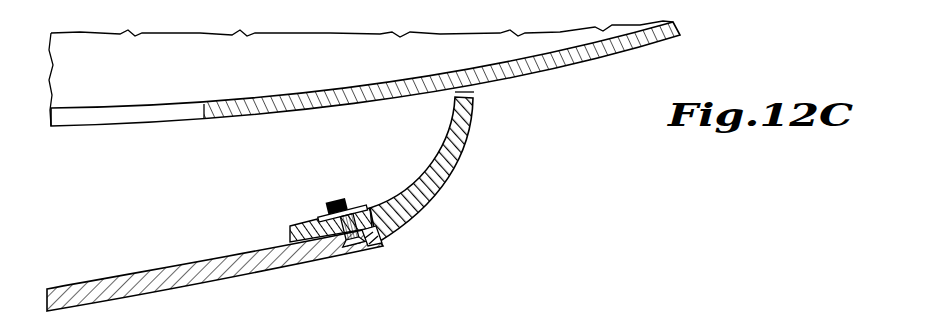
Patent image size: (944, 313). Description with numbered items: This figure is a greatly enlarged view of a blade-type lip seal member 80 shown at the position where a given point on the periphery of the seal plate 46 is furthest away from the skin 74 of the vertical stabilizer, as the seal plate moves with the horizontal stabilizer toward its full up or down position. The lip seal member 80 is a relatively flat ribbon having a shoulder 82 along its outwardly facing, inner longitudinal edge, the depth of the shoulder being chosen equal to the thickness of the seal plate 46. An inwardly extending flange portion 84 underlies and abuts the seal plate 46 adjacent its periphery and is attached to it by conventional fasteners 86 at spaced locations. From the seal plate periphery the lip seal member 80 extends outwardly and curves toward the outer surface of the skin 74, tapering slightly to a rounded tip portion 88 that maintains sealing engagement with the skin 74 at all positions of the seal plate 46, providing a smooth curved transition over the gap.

The skin 74 is at (253, 114).
The rounded tip portion 88 is at (474, 88).
The lip seal member 80 is at (459, 157).
The seal plate 46 is at (173, 265).
The flange portion 84 is at (295, 228).
The fasteners 86 is at (356, 206).
The shoulder 82 is at (373, 241).